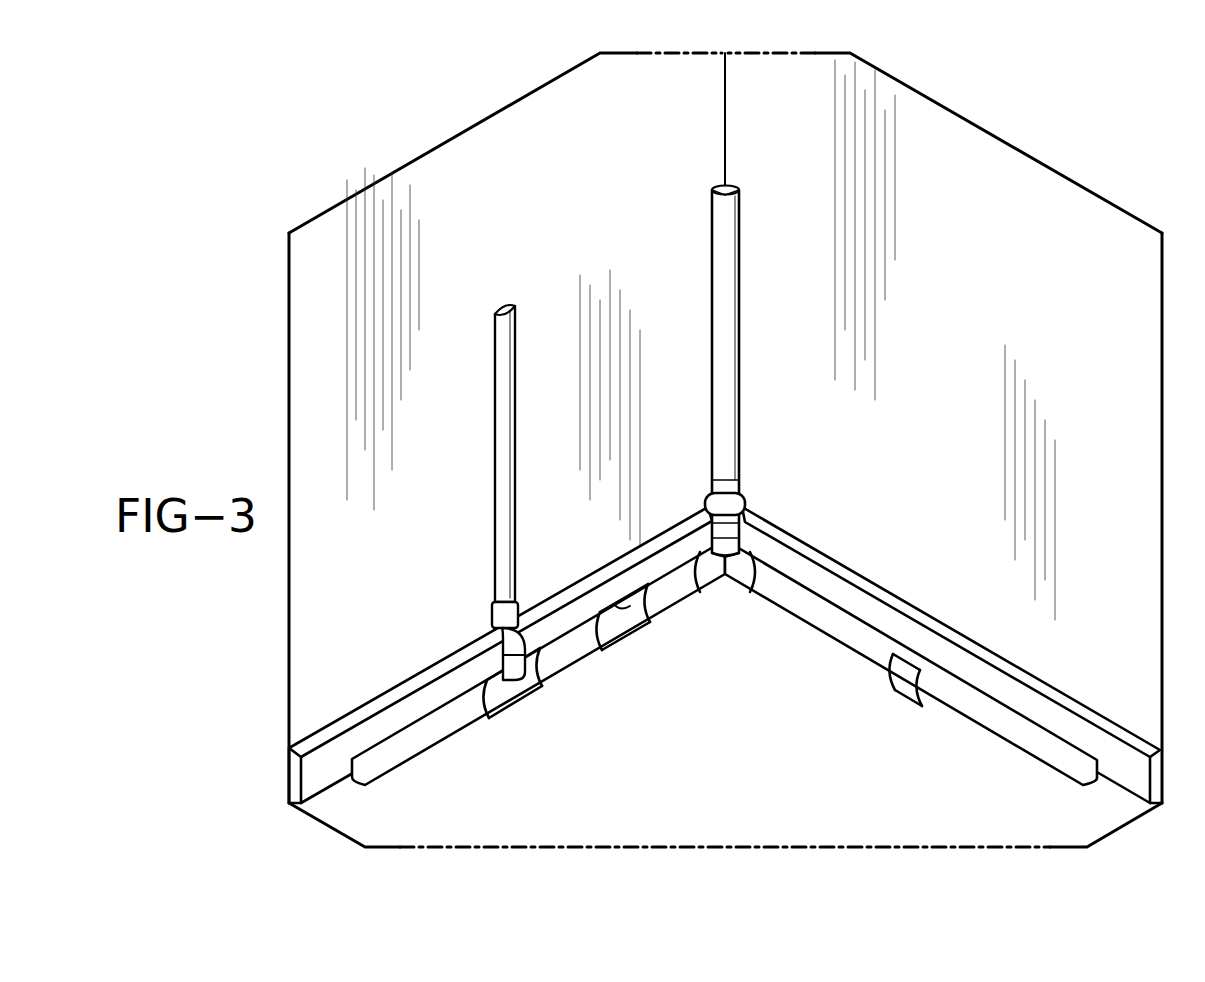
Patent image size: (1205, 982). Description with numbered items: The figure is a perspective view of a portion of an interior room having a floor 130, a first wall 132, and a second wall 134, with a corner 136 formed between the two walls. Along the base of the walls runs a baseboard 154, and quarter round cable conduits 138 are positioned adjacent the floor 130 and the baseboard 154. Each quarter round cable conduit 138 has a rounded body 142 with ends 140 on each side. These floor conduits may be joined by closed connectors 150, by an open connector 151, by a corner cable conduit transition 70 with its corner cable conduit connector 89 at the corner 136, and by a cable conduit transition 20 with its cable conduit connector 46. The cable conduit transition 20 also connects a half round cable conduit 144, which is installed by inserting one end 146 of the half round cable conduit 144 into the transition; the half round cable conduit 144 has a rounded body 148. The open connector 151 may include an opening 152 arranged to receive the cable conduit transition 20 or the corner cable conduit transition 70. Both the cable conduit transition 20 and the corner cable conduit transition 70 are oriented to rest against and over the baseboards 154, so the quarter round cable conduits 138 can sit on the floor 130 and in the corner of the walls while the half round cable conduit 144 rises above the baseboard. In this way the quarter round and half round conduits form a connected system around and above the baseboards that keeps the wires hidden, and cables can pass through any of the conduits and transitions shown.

The cable conduit transition 20 is at (488, 615).
The cable conduit connector 46 is at (531, 697).
The corner cable conduit transition 70 is at (704, 498).
The corner cable conduit connector 89 is at (752, 550).
The floor 130 is at (748, 803).
The first wall 132 is at (969, 198).
The second wall 134 is at (535, 198).
The corner 136 is at (722, 124).
The quarter round cable conduit 138 is at (724, 492).
The end 140 is at (735, 187).
The rounded body 142 is at (773, 358).
The half round cable conduit 144 is at (452, 441).
The end 146 is at (504, 309).
The rounded body 148 is at (505, 475).
The closed connector 150 is at (897, 684).
The open connector 151 is at (639, 641).
The opening 152 is at (620, 608).
The baseboard 154 is at (412, 686).